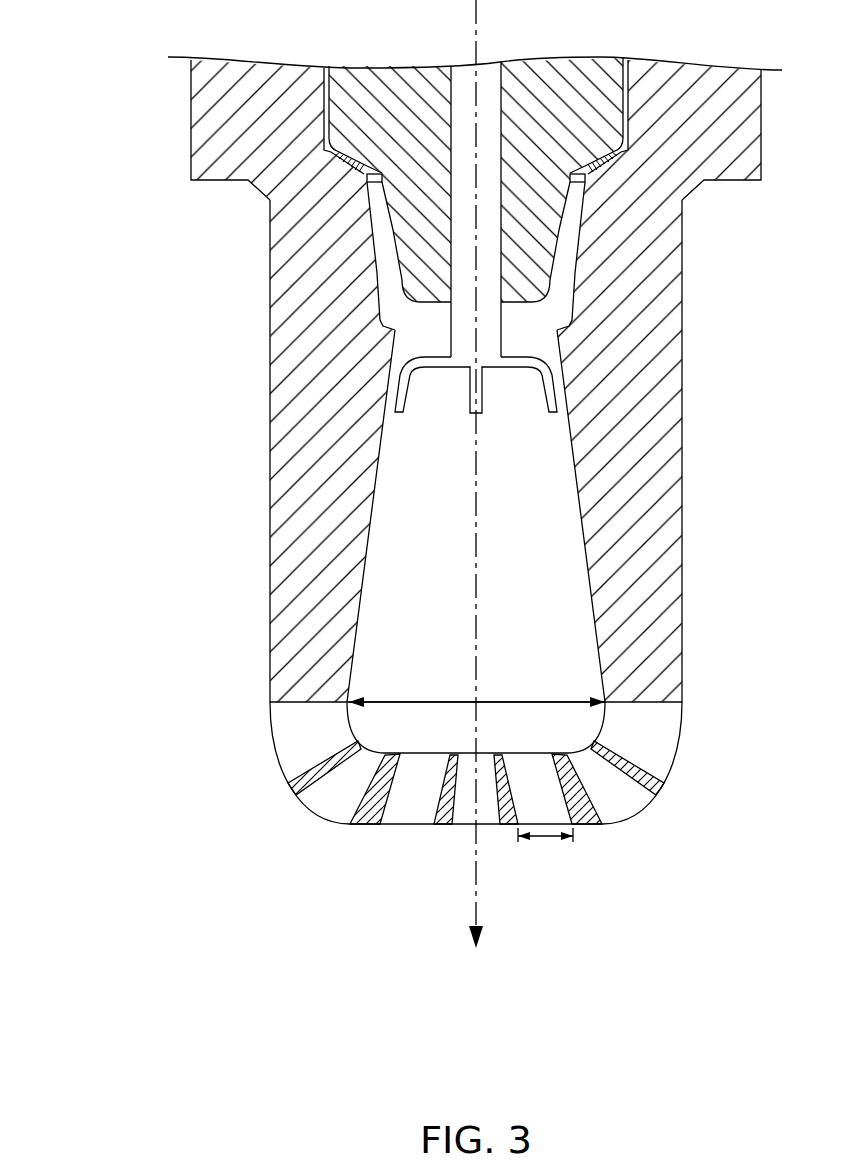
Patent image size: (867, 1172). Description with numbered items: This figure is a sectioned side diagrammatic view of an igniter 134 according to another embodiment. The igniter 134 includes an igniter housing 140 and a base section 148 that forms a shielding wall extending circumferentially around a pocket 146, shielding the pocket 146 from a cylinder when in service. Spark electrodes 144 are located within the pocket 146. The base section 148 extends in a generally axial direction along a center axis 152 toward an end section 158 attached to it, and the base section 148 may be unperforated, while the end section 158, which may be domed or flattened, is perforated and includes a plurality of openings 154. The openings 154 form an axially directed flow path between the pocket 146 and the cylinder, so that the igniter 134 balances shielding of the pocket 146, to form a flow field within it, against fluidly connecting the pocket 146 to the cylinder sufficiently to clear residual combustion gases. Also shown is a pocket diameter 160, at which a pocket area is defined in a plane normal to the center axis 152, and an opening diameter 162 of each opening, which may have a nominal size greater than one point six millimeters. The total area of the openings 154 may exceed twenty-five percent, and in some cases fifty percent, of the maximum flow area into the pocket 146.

The igniter 134 is at (97, 69).
The igniter housing 140 is at (270, 229).
The spark electrodes 144 is at (398, 414).
The pocket 146 is at (531, 552).
The base section 148 is at (275, 531).
The center axis 152 is at (476, 16).
The openings 154 is at (305, 705).
The end section 158 is at (290, 794).
The pocket diameter 160 is at (462, 701).
The opening diameter 162 is at (548, 848).